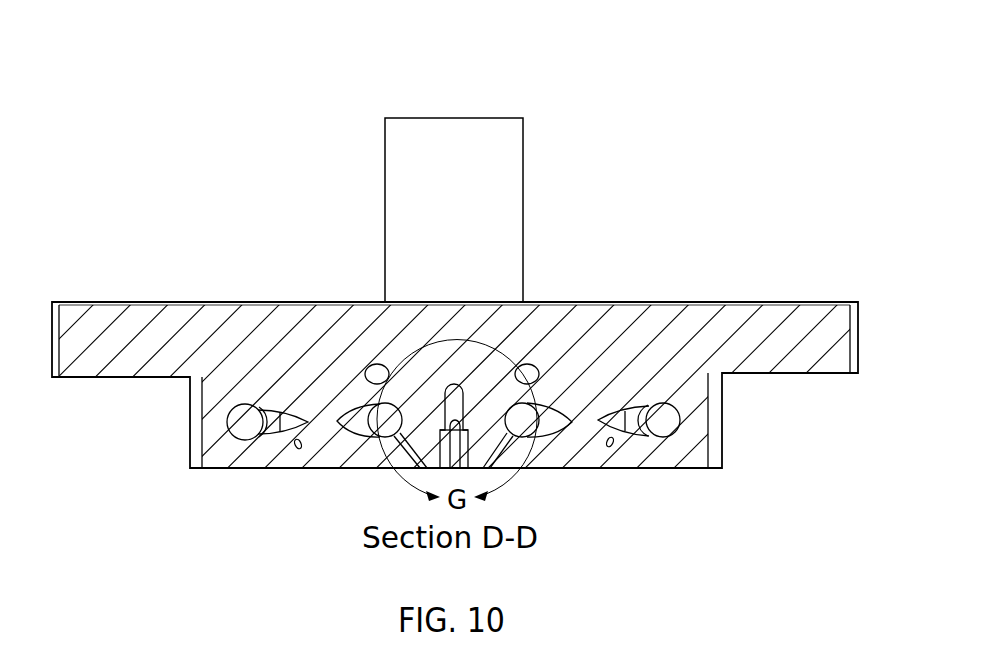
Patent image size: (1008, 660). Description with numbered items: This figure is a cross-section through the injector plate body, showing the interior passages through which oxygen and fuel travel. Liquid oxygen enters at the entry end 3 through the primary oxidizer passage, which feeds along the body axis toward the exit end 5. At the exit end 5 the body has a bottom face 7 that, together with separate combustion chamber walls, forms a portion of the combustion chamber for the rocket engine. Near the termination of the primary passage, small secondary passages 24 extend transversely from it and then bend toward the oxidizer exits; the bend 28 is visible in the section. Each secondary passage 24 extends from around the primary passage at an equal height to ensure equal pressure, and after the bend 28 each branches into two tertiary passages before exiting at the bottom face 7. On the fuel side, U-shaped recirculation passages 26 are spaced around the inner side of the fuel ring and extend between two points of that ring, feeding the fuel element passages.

The entry end 3 is at (497, 168).
The exit end 5 is at (456, 512).
The bottom face 7 is at (474, 392).
The secondary passages 24 is at (356, 276).
The recirculation passages 26 is at (614, 323).
The bend 28 is at (542, 310).